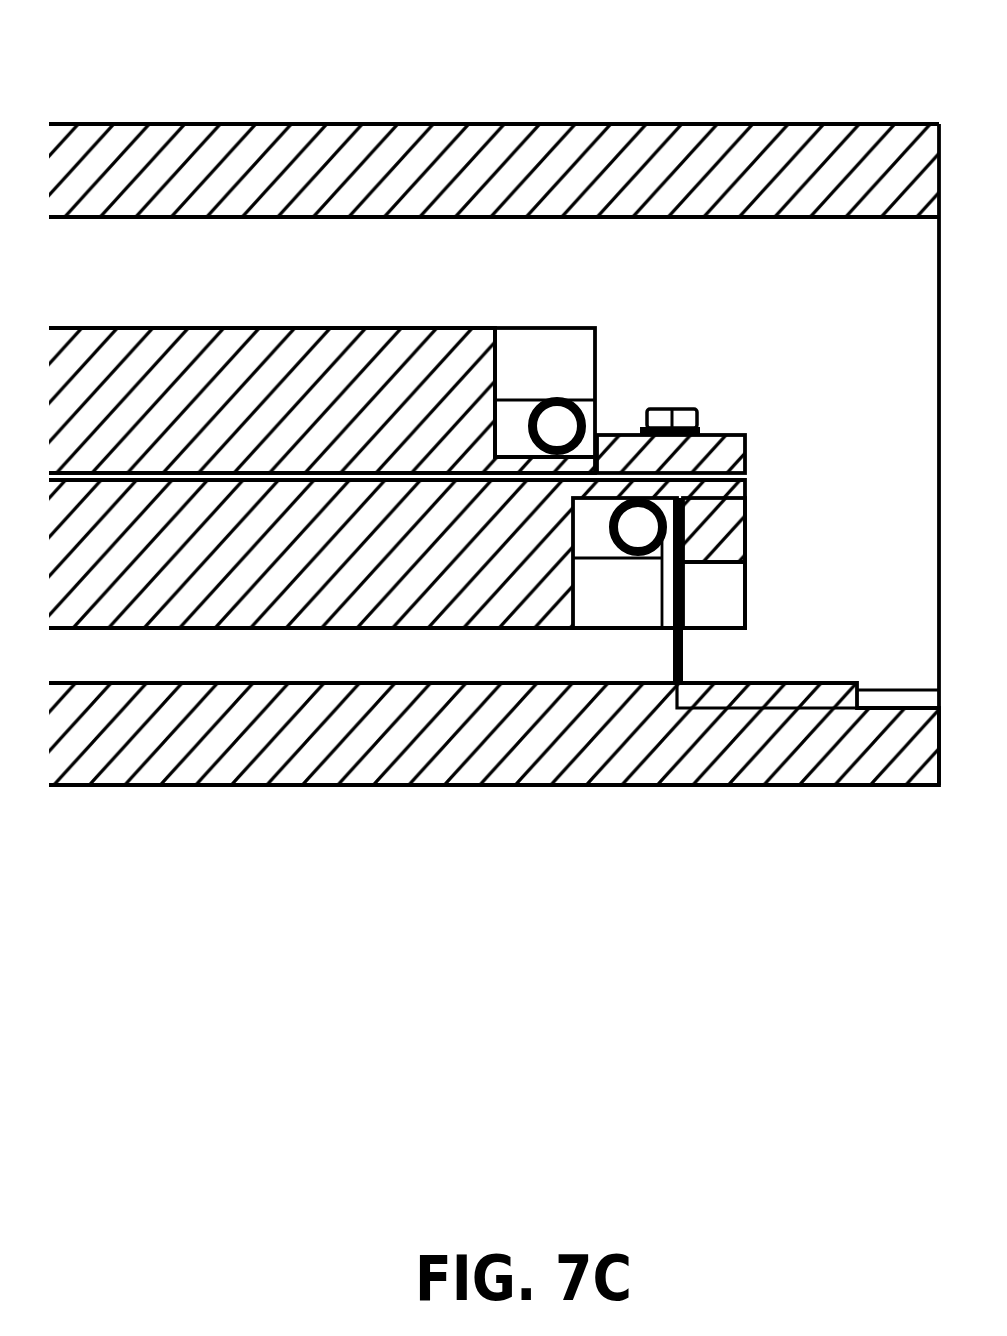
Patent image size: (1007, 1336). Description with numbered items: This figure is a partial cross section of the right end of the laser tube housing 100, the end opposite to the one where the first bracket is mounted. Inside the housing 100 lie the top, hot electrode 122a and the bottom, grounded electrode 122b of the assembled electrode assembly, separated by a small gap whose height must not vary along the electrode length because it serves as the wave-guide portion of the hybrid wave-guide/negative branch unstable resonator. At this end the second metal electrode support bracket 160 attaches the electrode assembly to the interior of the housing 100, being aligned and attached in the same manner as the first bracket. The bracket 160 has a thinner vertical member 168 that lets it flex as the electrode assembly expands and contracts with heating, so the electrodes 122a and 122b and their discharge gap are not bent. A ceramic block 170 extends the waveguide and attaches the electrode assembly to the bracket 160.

The laser tube housing 100 is at (693, 150).
The top, hot electrode 122a is at (258, 376).
The bottom, grounded electrode 122b is at (402, 592).
The second metal electrode support bracket 160 is at (630, 706).
The thinner vertical member 168 is at (745, 657).
The ceramic block 170 is at (718, 456).